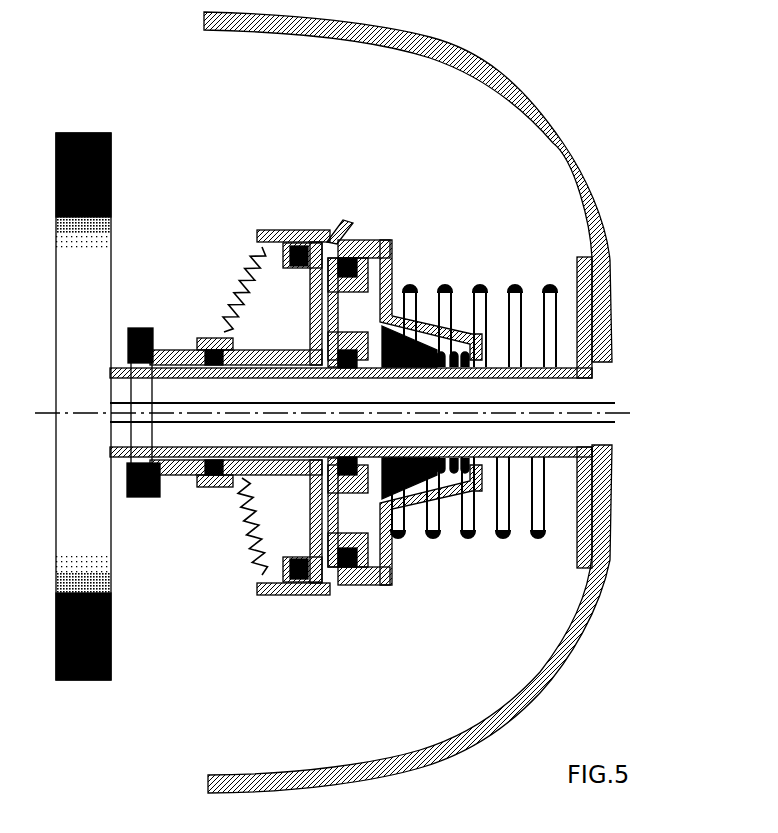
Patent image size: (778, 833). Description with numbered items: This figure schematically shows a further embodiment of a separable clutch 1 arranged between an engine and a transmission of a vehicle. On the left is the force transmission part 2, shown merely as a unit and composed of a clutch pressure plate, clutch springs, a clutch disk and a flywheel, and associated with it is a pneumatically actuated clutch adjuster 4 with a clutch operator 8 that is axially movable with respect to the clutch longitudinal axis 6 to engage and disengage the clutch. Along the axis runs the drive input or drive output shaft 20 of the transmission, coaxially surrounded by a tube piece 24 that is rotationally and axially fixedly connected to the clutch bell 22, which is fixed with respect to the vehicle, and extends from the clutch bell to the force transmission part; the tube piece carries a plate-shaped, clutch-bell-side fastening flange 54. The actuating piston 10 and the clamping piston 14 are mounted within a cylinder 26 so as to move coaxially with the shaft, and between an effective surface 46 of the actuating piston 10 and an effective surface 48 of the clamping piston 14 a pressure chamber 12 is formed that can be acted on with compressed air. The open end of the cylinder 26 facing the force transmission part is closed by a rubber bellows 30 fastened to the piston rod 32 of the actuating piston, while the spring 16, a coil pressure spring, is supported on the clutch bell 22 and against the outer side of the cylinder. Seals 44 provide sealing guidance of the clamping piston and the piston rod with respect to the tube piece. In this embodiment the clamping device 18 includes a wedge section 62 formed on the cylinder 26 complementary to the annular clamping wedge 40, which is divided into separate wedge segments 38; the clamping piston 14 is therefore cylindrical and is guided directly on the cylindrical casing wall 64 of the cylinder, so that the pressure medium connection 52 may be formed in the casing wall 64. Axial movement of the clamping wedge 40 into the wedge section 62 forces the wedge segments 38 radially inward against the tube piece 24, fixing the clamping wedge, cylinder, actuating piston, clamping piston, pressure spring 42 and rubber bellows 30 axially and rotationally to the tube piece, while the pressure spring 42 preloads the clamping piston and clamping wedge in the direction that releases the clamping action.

The separable clutch 1 is at (437, 402).
The force transmission part 2 is at (57, 613).
The clutch adjuster 4 is at (212, 665).
The clutch longitudinal axis 6 is at (43, 416).
The clutch operator 8 is at (125, 470).
The actuating piston 10 is at (236, 491).
The pressure chamber 12 is at (257, 425).
The clamping piston 14 is at (325, 420).
The spring 16 is at (513, 287).
The clamping device 18 is at (351, 311).
The drive input or drive output shaft 20 is at (602, 405).
The clutch bell 22 is at (527, 710).
The tube piece 24 is at (568, 363).
The cylinder 26 is at (287, 380).
The rubber bellows 30 is at (215, 345).
The piston rod 32 is at (228, 486).
The wedge segments 38 is at (420, 505).
The clamping wedge 40 is at (441, 490).
The pressure spring 42 is at (465, 490).
The seals 44 is at (192, 477).
The effective surface of the actuating piston 46 is at (310, 495).
The effective surface of the clamping piston 48 is at (327, 483).
The pressure medium connection 52 is at (345, 225).
The fastening flange 54 is at (590, 287).
The wedge section 62 is at (422, 317).
The casing wall 64 is at (297, 230).